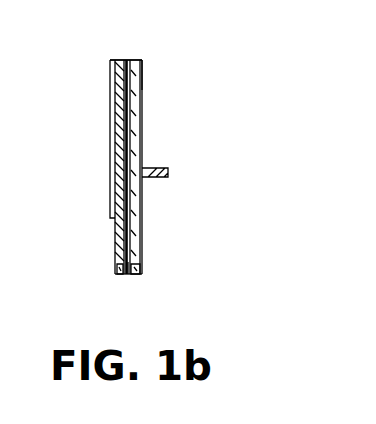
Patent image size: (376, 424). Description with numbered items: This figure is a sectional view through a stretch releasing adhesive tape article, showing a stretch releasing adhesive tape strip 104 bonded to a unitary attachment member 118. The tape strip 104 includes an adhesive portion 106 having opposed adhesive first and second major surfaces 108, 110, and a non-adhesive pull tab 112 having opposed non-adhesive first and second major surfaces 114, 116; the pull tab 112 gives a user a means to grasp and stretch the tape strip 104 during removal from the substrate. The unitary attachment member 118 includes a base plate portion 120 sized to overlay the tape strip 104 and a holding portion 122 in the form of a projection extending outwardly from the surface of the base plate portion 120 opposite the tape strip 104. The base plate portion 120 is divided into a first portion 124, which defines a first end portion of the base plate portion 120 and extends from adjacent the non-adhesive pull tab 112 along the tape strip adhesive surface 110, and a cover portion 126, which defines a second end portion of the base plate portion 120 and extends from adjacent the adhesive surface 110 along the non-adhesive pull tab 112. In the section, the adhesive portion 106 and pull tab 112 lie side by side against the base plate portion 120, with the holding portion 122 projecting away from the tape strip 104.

The stretch releasing adhesive tape strip 104 is at (102, 65).
The adhesive portion 106 is at (114, 175).
The adhesive first major surface 108 is at (115, 121).
The adhesive second major surface 110 is at (129, 60).
The non-adhesive pull tab 112 is at (117, 276).
The non-adhesive first major surface 114 is at (117, 242).
The non-adhesive second major surface 116 is at (128, 274).
The unitary attachment member 118 is at (152, 109).
The base plate portion 120 is at (136, 135).
The holding portion 122 is at (163, 178).
The first portion 124 is at (142, 80).
The cover portion 126 is at (141, 276).